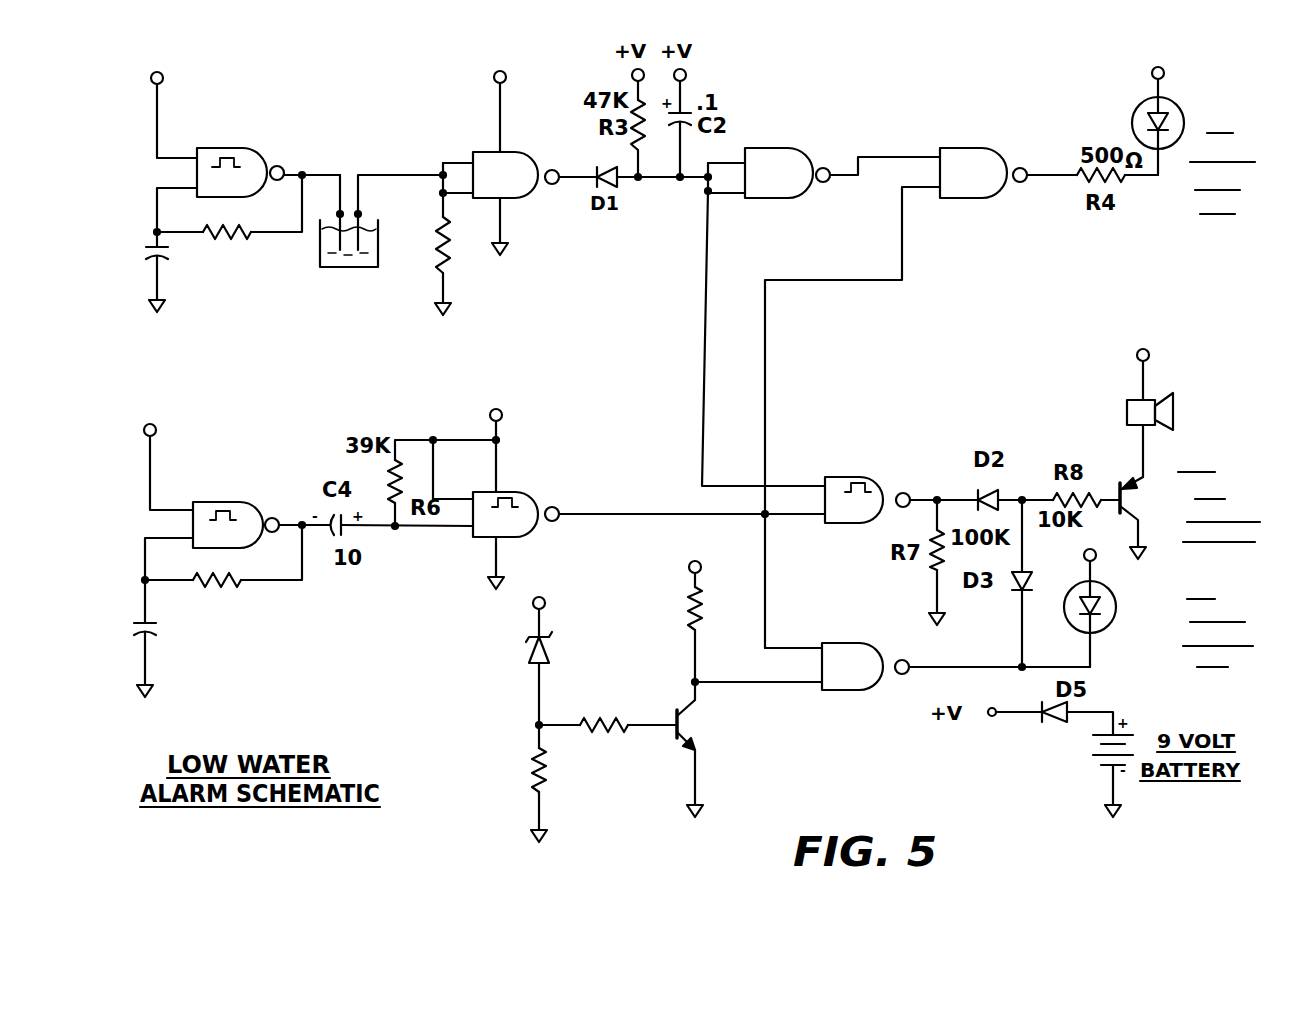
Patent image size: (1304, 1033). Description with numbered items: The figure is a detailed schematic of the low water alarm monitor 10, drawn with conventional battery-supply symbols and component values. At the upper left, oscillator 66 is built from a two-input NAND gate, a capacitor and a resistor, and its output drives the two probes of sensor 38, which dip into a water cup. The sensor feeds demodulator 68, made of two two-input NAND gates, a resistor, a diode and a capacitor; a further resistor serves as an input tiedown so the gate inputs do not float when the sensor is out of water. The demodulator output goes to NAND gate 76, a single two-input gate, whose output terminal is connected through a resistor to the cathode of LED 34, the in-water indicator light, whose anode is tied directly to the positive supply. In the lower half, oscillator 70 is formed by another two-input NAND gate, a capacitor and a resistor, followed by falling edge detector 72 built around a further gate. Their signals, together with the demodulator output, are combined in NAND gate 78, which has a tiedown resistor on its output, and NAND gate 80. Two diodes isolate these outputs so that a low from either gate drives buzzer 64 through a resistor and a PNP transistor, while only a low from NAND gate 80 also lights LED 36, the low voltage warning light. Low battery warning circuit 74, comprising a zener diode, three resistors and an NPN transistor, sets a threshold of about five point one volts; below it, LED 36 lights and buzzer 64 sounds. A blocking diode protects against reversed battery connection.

The low water alarm circuit 10 is at (840, 108).
The LED 34 is at (1172, 148).
The low battery voltage LED 36 is at (1115, 602).
The sensor 38 is at (366, 324).
The buzzer 64 is at (1098, 415).
The oscillator 66 is at (270, 140).
The demodulator 68 is at (548, 118).
The oscillator 70 is at (248, 480).
The falling edge detector 72 is at (541, 442).
The low battery warning circuit 74 is at (726, 759).
The NAND gate 76 is at (971, 215).
The NAND gate 78 is at (877, 458).
The NAND gate 80 is at (865, 710).